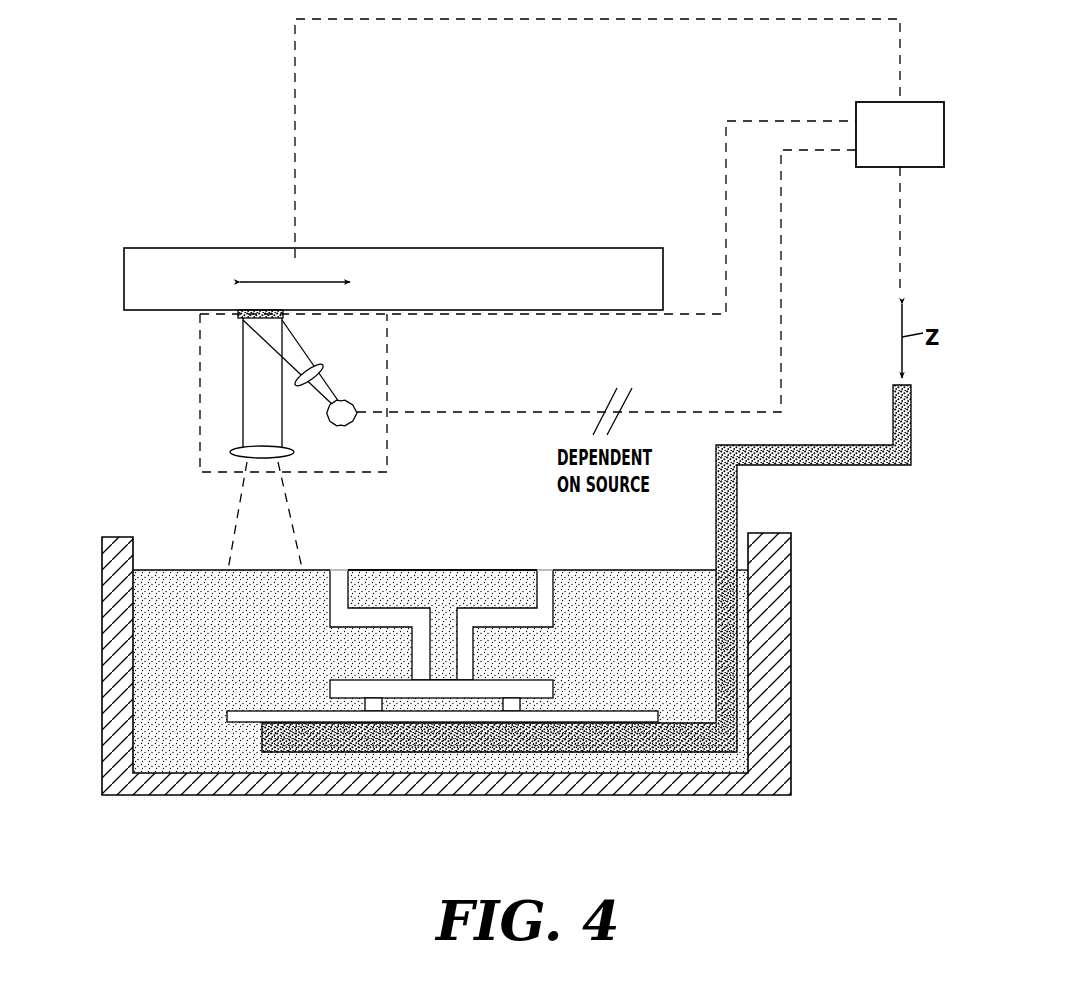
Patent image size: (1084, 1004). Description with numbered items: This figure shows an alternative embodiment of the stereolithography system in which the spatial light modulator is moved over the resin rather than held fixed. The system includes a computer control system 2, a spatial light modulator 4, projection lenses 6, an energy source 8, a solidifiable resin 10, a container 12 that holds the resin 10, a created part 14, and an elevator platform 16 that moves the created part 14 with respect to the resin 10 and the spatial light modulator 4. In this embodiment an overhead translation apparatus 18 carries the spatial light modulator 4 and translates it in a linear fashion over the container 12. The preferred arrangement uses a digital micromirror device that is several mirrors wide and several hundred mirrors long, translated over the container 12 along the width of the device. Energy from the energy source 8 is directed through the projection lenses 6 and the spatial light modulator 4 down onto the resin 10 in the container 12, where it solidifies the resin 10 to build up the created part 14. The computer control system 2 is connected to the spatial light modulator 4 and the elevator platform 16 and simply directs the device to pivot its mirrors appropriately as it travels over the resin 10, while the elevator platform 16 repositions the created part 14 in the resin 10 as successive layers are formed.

The computer control system 2 is at (891, 151).
The spatial light modulator 4 is at (235, 318).
The projection lenses 6 is at (302, 394).
The energy source 8 is at (359, 428).
The solidifiable resin 10 is at (160, 601).
The container 12 is at (107, 533).
The created part 14 is at (560, 614).
The elevator platform 16 is at (858, 470).
The overhead translation apparatus 18 is at (411, 246).